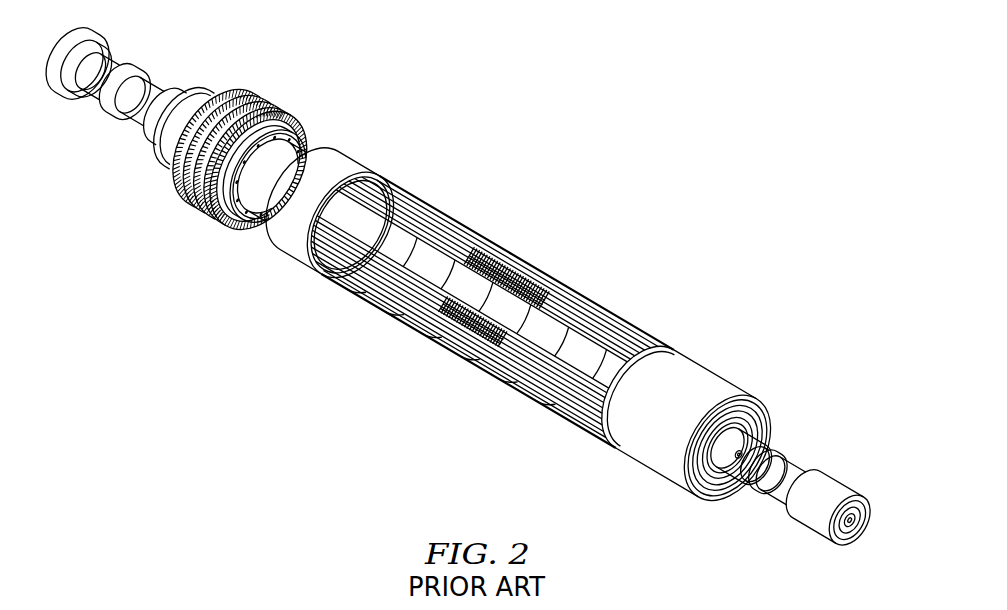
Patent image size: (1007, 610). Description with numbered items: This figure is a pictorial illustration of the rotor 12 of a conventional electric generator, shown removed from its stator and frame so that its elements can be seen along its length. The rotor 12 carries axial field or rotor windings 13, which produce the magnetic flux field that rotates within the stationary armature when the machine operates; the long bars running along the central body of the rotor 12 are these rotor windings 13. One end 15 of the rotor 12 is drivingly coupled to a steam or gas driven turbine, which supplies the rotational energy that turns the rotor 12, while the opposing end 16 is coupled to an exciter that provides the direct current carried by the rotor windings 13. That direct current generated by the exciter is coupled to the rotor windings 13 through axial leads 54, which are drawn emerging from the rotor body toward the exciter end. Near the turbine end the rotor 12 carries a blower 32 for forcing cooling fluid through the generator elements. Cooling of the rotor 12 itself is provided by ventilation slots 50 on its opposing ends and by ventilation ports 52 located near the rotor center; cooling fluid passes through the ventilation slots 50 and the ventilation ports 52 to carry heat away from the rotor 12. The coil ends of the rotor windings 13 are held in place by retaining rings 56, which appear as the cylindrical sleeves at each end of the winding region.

The rotor 12 is at (684, 266).
The rotor windings 13 is at (447, 222).
The one end of the rotor 15 is at (113, 34).
The opposing end of the rotor 16 is at (838, 545).
The blower 32 is at (217, 222).
The ventilation slots 50 is at (347, 275).
The ventilation ports 52 is at (523, 268).
The axial leads 54 is at (866, 512).
The retaining rings 56 is at (357, 157).